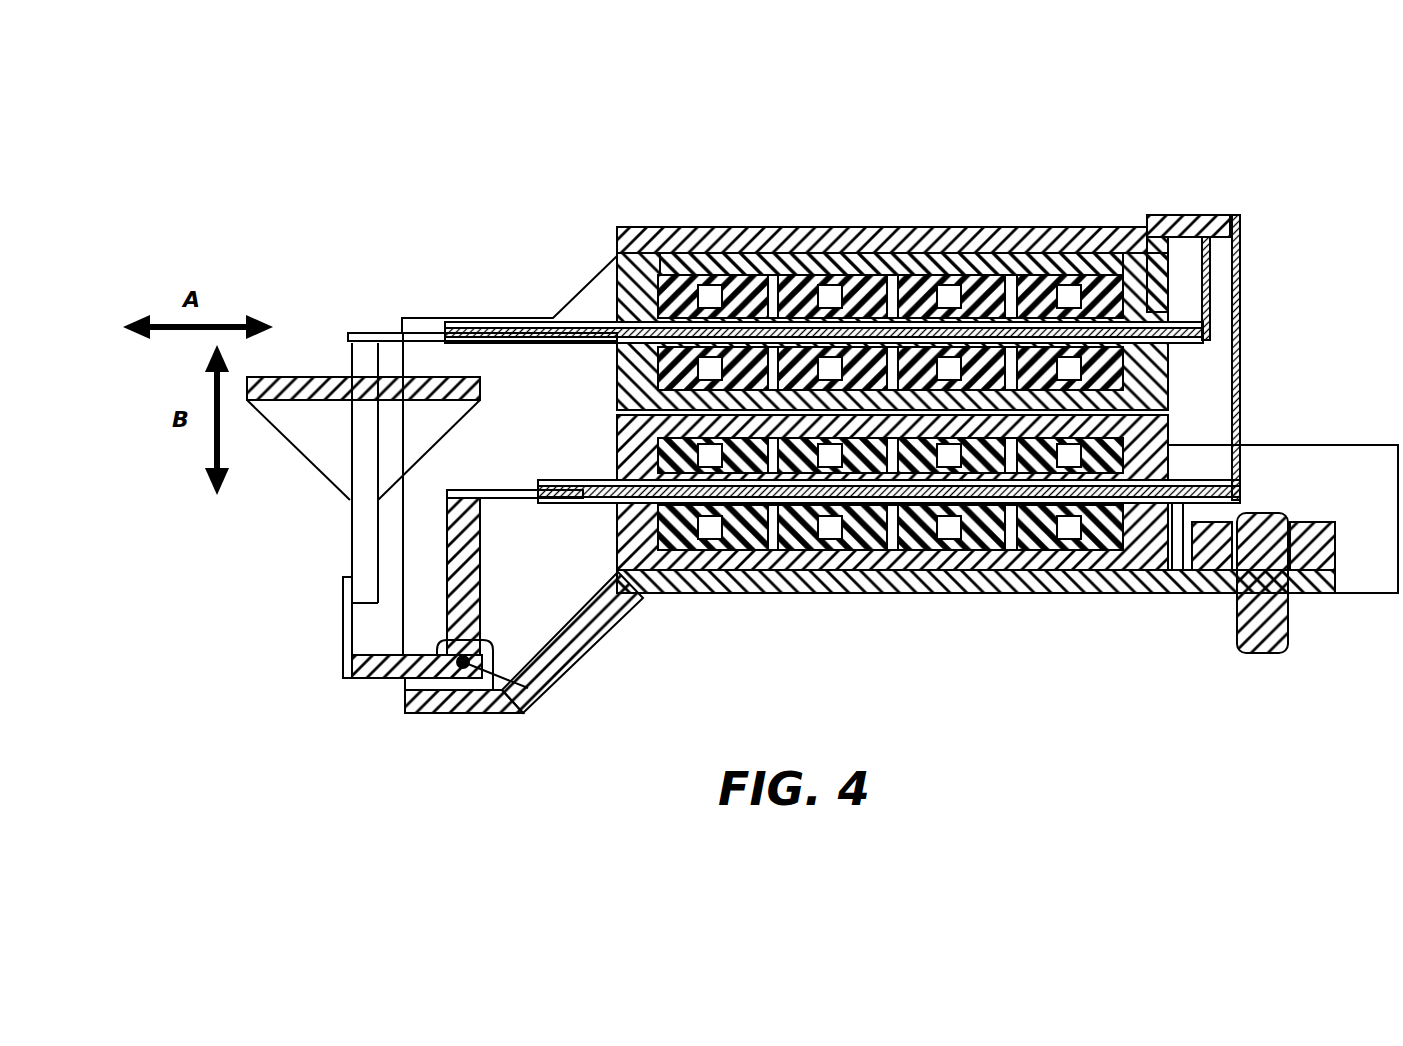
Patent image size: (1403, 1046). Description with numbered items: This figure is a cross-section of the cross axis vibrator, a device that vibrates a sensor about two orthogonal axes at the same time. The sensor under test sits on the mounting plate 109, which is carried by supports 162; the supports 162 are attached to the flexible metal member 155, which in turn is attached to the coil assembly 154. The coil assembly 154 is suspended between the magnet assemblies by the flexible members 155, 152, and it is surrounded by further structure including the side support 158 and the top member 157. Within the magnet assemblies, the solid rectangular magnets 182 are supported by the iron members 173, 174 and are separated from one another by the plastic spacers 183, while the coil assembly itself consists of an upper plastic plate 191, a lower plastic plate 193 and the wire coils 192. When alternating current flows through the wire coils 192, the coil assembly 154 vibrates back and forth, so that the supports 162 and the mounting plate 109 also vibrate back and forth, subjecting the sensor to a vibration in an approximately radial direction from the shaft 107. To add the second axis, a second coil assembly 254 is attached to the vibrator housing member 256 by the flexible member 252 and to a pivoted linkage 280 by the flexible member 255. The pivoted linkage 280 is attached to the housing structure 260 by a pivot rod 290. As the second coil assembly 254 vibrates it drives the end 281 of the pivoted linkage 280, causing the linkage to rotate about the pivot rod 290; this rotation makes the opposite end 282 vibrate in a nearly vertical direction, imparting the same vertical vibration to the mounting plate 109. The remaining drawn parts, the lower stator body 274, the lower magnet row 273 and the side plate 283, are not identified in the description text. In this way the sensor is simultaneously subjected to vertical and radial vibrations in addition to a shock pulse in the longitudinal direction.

The shaft 107 is at (1273, 600).
The mounting plate 109 is at (333, 388).
The flexible member 152 is at (1237, 222).
The coil assembly 154 is at (593, 240).
The flexible metal member 155 is at (405, 320).
The top member 157 is at (826, 232).
The side support 158 is at (547, 365).
The supports 162 is at (355, 510).
The iron member 173 is at (1012, 232).
The iron member 174 is at (1150, 382).
The solid rectangular magnets 182 is at (905, 230).
The plastic spacers 183 is at (766, 236).
The upper plastic plate 191 is at (1075, 232).
The wire coils 192 is at (800, 465).
The lower plastic plate 193 is at (1168, 345).
The flexible member 252 is at (1243, 255).
The second coil assembly 254 is at (655, 600).
The flexible member 255 is at (497, 490).
The vibrator housing member 256 is at (1170, 215).
The housing structure 260 is at (870, 595).
The lower magnet row 273 is at (935, 595).
The bearing block 274 is at (1150, 595).
The pivoted linkage 280 is at (445, 700).
The end of pivoted linkage 281 is at (505, 515).
The end of pivoted linkage 282 is at (352, 680).
The side plate 283 is at (343, 622).
The pivot rod 290 is at (555, 712).